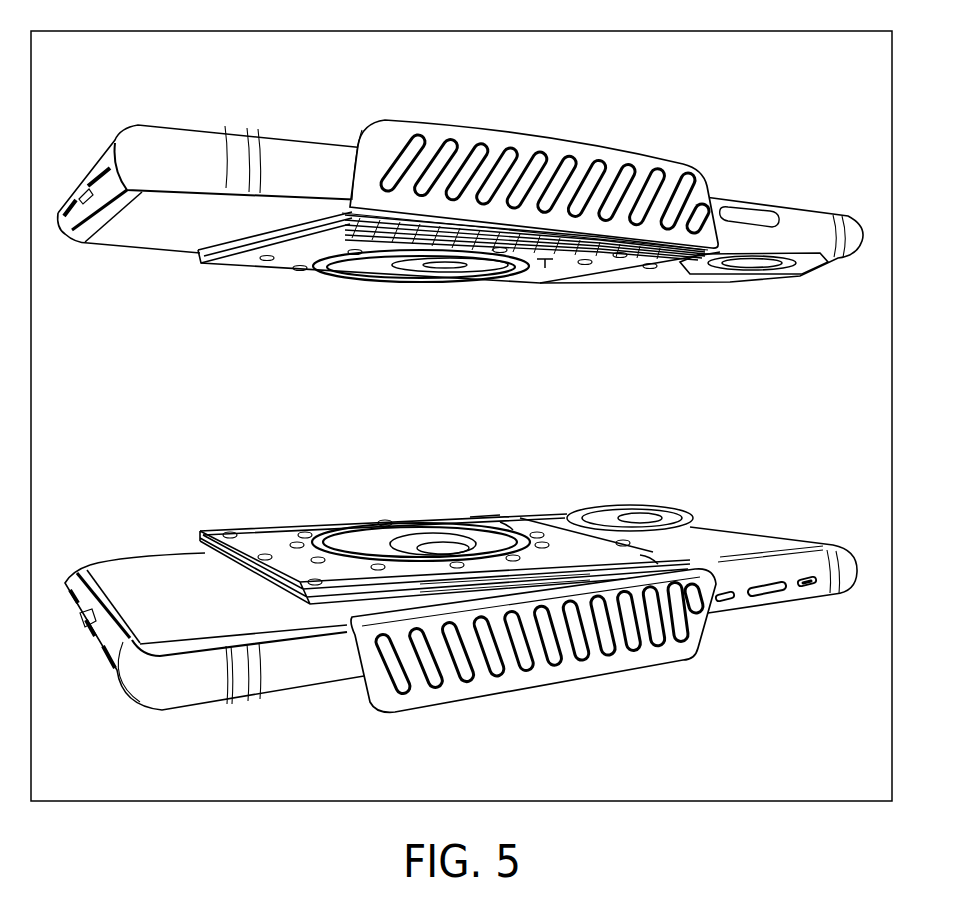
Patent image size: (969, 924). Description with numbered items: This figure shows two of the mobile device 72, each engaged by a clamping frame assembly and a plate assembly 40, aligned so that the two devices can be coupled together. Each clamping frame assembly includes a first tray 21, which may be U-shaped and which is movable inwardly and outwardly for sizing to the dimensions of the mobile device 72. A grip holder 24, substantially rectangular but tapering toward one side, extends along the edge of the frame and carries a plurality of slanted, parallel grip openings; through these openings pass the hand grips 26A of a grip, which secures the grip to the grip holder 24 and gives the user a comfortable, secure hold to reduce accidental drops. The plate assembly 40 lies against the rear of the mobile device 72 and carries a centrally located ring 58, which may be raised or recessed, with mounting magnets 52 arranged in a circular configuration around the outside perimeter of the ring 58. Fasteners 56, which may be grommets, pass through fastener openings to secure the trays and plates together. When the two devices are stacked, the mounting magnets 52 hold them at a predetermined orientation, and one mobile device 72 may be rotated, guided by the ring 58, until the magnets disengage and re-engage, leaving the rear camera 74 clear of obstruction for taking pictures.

The first tray 21 is at (658, 562).
The grip holder 24 is at (578, 158).
The hand grips 26A is at (478, 152).
The plate assembly 40 is at (256, 288).
The mounting magnets 52 is at (545, 268).
The fasteners 56 is at (487, 514).
The ring 58 is at (330, 275).
The mobile device 72 is at (174, 146).
The camera 74 is at (627, 520).